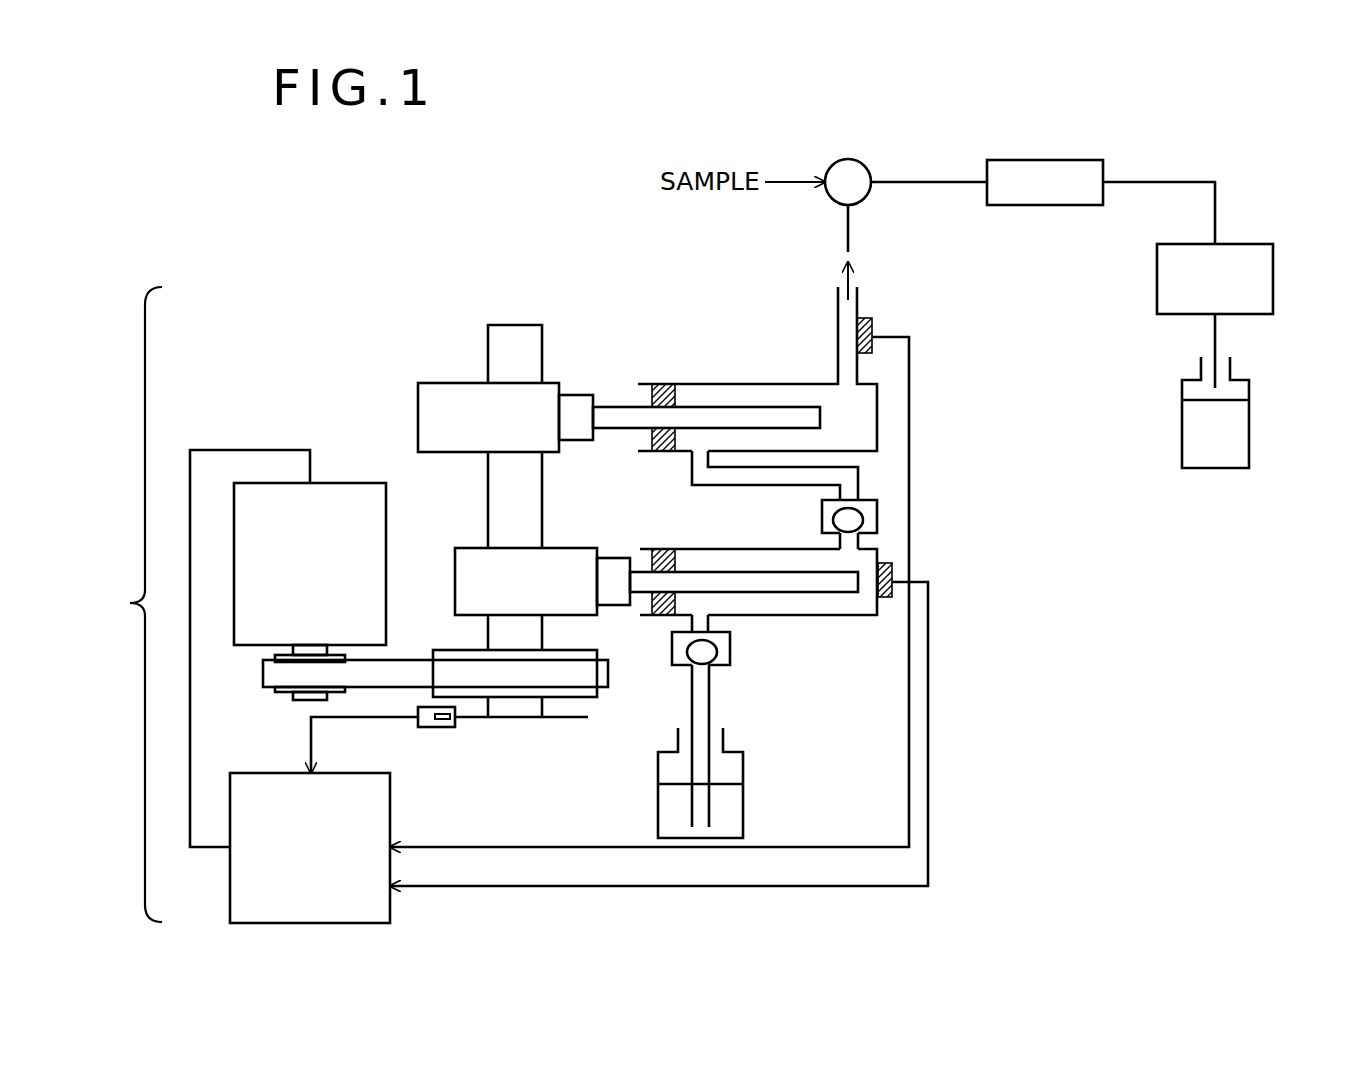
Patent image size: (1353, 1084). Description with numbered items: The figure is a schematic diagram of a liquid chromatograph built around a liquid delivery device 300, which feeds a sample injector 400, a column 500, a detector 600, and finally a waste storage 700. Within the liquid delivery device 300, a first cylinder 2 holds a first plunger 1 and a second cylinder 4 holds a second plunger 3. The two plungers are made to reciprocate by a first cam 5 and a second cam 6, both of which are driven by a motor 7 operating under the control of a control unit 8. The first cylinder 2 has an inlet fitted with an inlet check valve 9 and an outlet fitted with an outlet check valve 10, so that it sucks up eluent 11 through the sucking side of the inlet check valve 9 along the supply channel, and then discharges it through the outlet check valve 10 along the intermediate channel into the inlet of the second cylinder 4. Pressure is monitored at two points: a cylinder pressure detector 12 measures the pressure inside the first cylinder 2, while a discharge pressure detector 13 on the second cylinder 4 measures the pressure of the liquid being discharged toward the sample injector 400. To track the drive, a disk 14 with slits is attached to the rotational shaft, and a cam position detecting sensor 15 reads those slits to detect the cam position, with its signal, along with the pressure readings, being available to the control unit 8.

The first plunger 1 is at (810, 585).
The first cylinder 2 is at (850, 618).
The second plunger 3 is at (800, 417).
The second cylinder 4 is at (757, 383).
The first cam 5 is at (441, 383).
The second cam 6 is at (465, 548).
The motor 7 is at (352, 483).
The control unit 8 is at (260, 773).
The inlet check valve 9 is at (730, 655).
The outlet check valve 10 is at (820, 518).
The eluent 11 is at (725, 808).
The cylinder pressure detector 12 is at (895, 568).
The discharge pressure detector 13 is at (873, 323).
The disk 14 is at (517, 718).
The cam position detecting sensor 15 is at (437, 728).
The liquid delivery device 300 is at (119, 604).
The sample injector 400 is at (848, 158).
The column 500 is at (1047, 160).
The detector 600 is at (1275, 283).
The waste storage 700 is at (1250, 437).